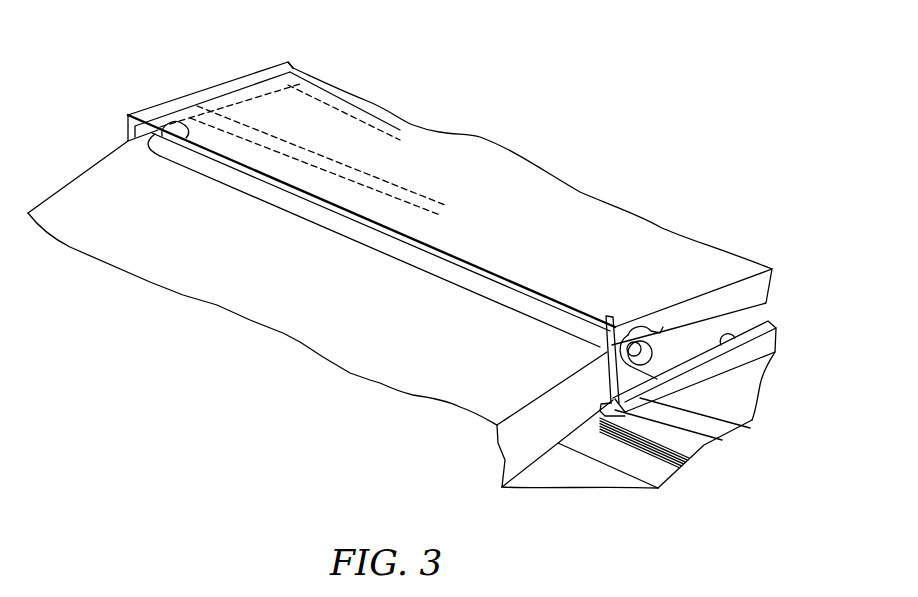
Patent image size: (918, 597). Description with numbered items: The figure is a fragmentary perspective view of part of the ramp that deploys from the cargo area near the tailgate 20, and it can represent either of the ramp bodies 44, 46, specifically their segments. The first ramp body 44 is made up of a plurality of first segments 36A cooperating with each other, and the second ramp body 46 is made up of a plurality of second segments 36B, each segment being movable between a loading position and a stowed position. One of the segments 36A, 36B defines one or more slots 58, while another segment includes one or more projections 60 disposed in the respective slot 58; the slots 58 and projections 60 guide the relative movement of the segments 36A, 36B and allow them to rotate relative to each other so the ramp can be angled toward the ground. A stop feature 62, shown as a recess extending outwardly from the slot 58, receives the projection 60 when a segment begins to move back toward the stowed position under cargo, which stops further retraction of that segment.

The tailgate 20 is at (741, 392).
The first segments 36A is at (507, 183).
The second segments 36B is at (364, 360).
The first ramp body 44 is at (323, 177).
The second ramp body 46 is at (144, 74).
The slot 58 is at (289, 93).
The projection 60 is at (606, 387).
The stop feature 62 is at (180, 124).